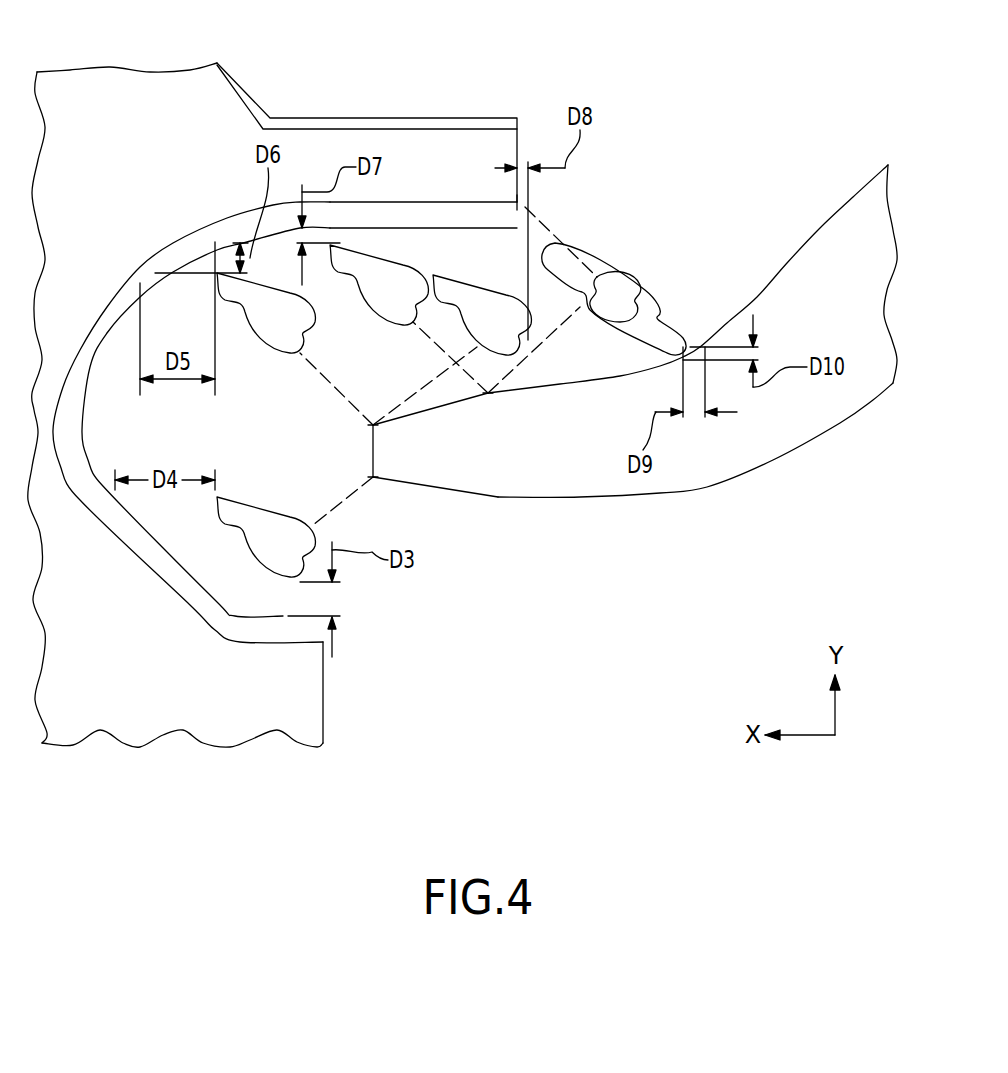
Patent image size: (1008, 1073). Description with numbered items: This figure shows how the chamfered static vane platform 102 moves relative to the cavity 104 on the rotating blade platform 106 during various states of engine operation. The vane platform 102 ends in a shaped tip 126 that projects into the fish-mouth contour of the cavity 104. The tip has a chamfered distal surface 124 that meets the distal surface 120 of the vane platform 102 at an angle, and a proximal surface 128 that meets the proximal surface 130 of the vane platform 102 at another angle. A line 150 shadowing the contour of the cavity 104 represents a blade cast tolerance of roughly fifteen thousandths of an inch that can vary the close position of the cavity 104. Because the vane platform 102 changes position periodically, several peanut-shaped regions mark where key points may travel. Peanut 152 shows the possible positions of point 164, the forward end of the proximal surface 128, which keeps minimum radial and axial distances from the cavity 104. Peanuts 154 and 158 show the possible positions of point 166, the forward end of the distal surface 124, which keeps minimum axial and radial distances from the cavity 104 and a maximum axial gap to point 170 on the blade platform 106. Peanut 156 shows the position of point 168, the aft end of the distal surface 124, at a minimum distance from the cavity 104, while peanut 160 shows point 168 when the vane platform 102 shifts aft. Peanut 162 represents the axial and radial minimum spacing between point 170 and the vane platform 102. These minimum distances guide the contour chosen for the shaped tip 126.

The vane platform 102 is at (838, 243).
The cavity 104 is at (118, 267).
The blade platform 106 is at (66, 109).
The distal surface 120 is at (560, 385).
The distal surface 124 is at (450, 405).
The shaped tip 126 is at (373, 450).
The proximal surface 128 is at (430, 488).
The proximal surface 130 is at (585, 497).
The line 150 is at (398, 227).
The peanut 152 is at (255, 553).
The peanut 154 is at (257, 326).
The peanut 156 is at (368, 297).
The peanut 158 is at (473, 325).
The peanut 160 is at (612, 262).
The peanut 162 is at (660, 312).
The point 164 is at (373, 477).
The point 166 is at (373, 425).
The point 168 is at (490, 393).
The point 170 is at (517, 202).